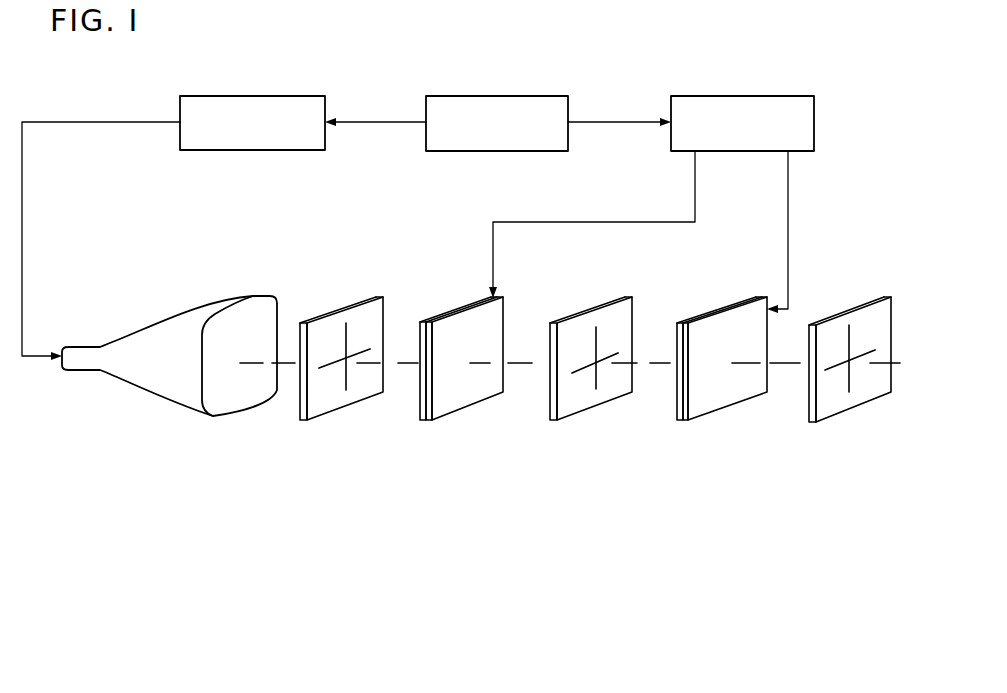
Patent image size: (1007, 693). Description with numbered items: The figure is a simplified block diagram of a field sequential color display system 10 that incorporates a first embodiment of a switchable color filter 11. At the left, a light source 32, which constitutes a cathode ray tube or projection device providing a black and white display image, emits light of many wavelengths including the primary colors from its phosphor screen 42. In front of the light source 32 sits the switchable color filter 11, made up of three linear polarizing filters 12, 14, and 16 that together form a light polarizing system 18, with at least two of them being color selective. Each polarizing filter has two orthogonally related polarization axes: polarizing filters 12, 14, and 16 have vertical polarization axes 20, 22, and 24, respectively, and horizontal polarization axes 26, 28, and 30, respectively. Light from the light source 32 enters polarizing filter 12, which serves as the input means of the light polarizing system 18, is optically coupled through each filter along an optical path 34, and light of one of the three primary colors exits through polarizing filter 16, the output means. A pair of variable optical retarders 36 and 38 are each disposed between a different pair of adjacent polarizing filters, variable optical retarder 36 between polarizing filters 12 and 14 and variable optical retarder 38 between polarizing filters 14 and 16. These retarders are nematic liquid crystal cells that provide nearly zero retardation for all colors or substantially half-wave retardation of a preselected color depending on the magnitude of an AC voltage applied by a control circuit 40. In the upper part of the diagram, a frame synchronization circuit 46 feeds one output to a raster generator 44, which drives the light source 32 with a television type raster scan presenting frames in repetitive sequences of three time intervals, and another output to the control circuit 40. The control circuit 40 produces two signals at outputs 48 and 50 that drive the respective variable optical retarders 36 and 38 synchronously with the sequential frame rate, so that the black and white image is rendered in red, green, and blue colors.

The field sequential color display system 10 is at (170, 480).
The switchable color filter 11 is at (486, 490).
The polarizing filter 12 is at (325, 414).
The polarizing filter 14 is at (585, 413).
The polarizing filter 16 is at (838, 416).
The light polarizing system 18 is at (617, 287).
The vertical polarization axis 20 is at (344, 336).
The vertical polarization axis 22 is at (594, 335).
The vertical polarization axis 24 is at (848, 337).
The horizontal polarization axis 26 is at (360, 350).
The horizontal polarization axis 28 is at (612, 352).
The horizontal polarization axis 30 is at (865, 351).
The light source 32 is at (160, 394).
The optical path 34 is at (790, 364).
The variable optical retarder 36 is at (455, 412).
The variable optical retarder 38 is at (712, 413).
The control circuit 40 is at (764, 96).
The phosphor screen 42 is at (243, 398).
The raster generator 44 is at (302, 96).
The frame synchronization circuit 46 is at (520, 96).
The output 48 is at (695, 186).
The output 50 is at (788, 188).